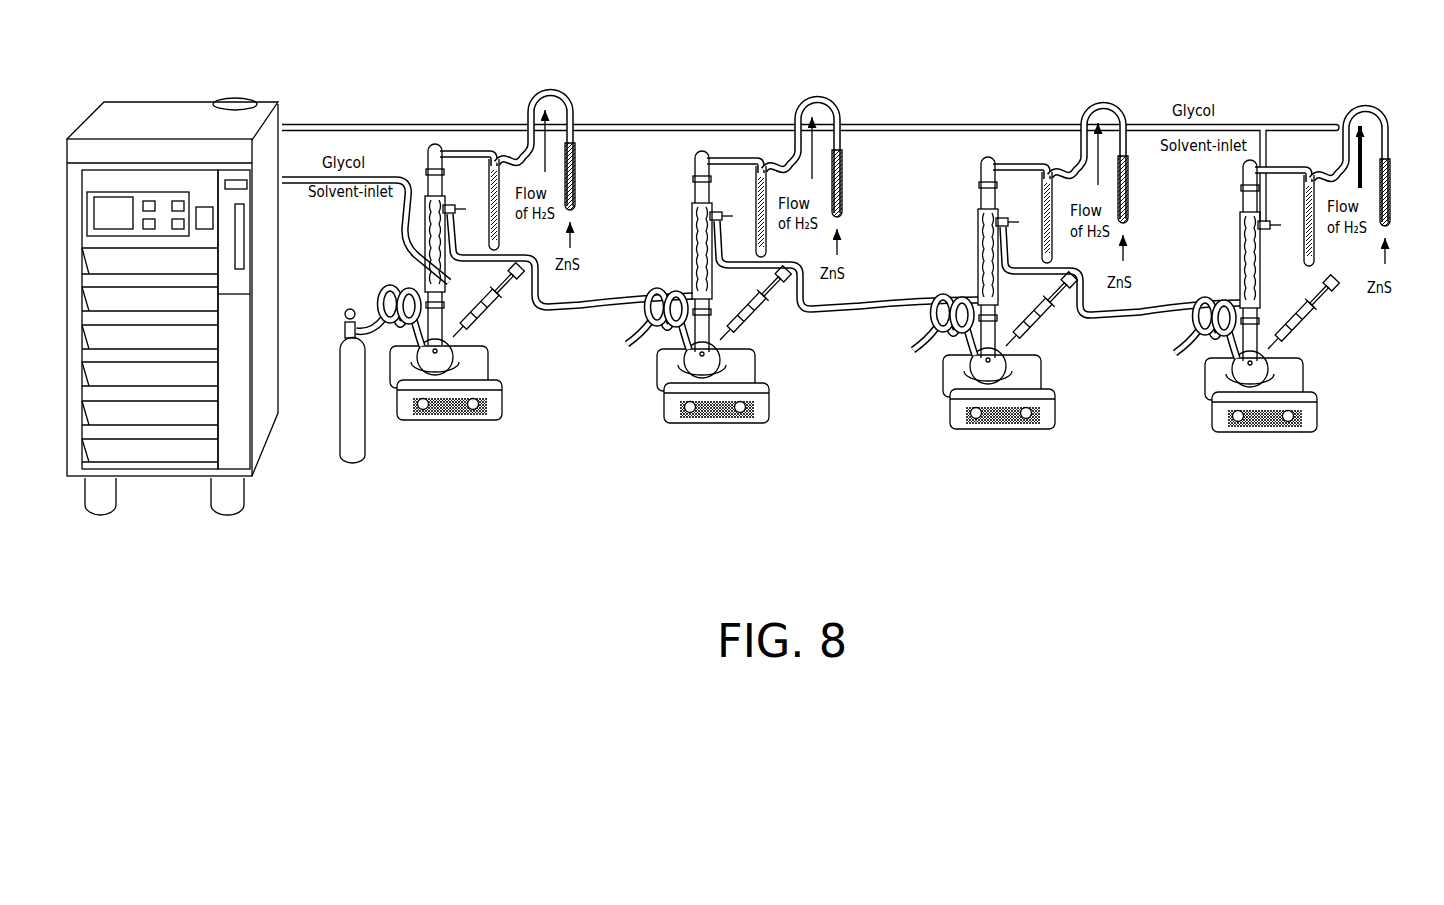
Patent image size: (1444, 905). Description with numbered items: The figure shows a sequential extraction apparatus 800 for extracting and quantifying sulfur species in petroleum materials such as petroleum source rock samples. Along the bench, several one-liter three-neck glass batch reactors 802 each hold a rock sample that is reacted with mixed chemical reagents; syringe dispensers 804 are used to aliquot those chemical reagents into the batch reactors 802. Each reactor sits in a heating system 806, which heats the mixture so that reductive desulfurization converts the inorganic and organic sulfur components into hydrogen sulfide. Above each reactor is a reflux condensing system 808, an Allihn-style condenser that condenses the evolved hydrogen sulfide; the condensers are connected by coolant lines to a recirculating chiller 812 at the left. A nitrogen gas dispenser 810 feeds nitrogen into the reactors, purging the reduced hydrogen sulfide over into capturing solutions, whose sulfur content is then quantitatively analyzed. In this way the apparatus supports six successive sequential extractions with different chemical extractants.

The sequential extraction apparatus 800 is at (700, 109).
The three-neck glass batch reactor 802 is at (441, 342).
The syringe dispenser 804 is at (492, 313).
The heating system 806 is at (460, 366).
The reflux condensing system 808 is at (424, 243).
The nitrogen gas dispenser 810 is at (417, 342).
The recirculating chiller 812 is at (172, 130).